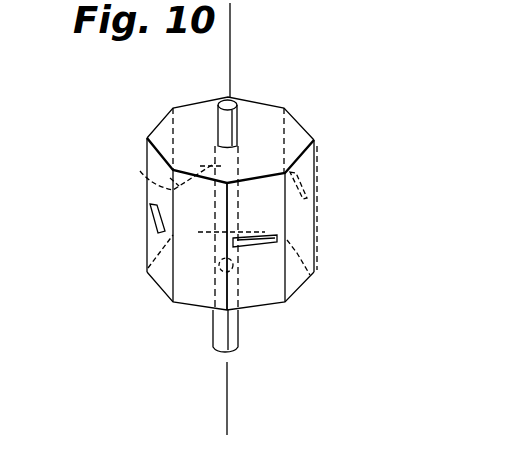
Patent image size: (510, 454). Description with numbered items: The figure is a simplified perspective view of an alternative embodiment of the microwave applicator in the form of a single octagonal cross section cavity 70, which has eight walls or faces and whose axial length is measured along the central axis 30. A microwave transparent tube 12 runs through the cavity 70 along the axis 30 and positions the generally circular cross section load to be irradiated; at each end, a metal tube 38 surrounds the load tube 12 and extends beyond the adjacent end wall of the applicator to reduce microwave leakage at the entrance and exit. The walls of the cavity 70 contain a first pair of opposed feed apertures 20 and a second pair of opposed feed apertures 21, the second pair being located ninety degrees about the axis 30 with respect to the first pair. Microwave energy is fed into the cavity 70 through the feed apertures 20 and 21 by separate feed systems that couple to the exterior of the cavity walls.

The axis 30 is at (231, 57).
The metal tube 38 is at (243, 127).
The octagonal cross section cavity 70 is at (345, 153).
The first pair of opposed feed apertures 20 is at (140, 171).
The second pair of opposed feed apertures 21 is at (157, 227).
The microwave transparent tube 12 is at (218, 263).